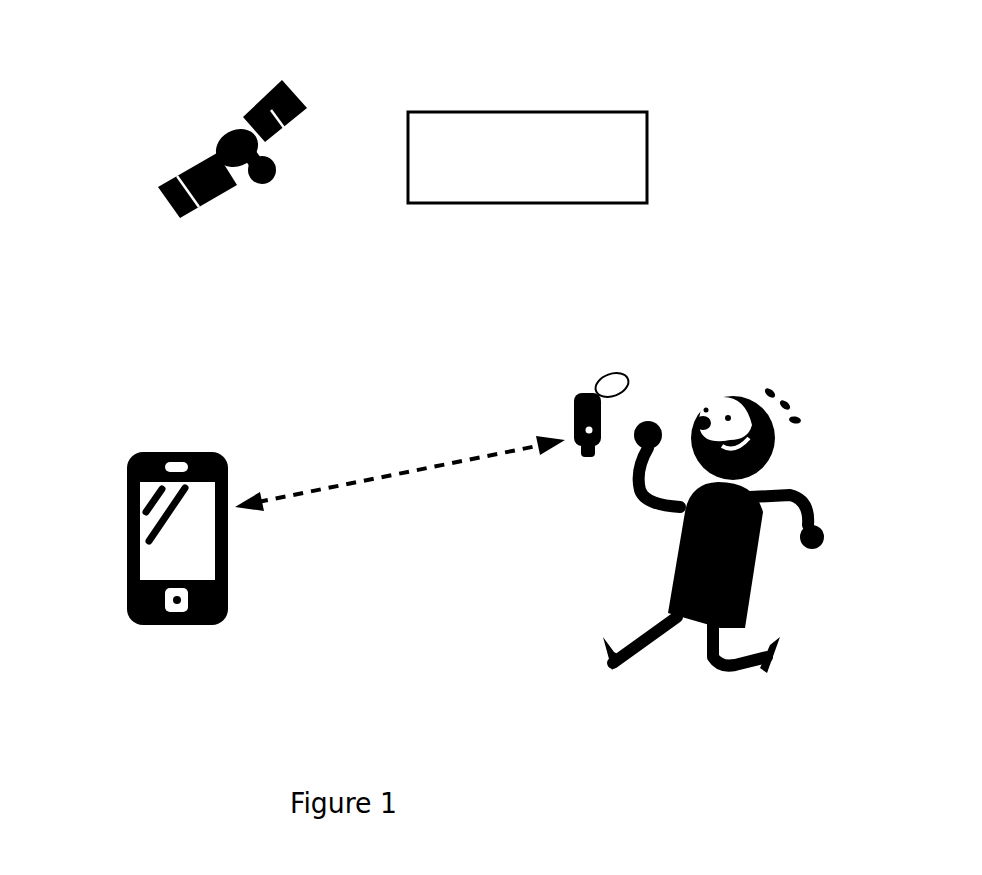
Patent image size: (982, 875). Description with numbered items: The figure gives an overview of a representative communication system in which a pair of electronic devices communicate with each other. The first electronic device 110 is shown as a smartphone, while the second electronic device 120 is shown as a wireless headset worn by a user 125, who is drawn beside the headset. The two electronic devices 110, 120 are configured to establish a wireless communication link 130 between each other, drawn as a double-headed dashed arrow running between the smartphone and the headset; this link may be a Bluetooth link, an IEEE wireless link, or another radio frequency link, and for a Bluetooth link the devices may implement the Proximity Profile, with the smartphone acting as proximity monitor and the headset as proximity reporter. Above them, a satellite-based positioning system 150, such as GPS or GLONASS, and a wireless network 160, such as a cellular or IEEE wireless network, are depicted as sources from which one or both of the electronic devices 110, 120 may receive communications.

The electronic device 110 is at (228, 452).
The electronic device 120 is at (627, 368).
The user 125 is at (800, 383).
The wireless communication link 130 is at (400, 477).
The satellite-based positioning system 150 is at (158, 125).
The wireless network 160 is at (546, 110).